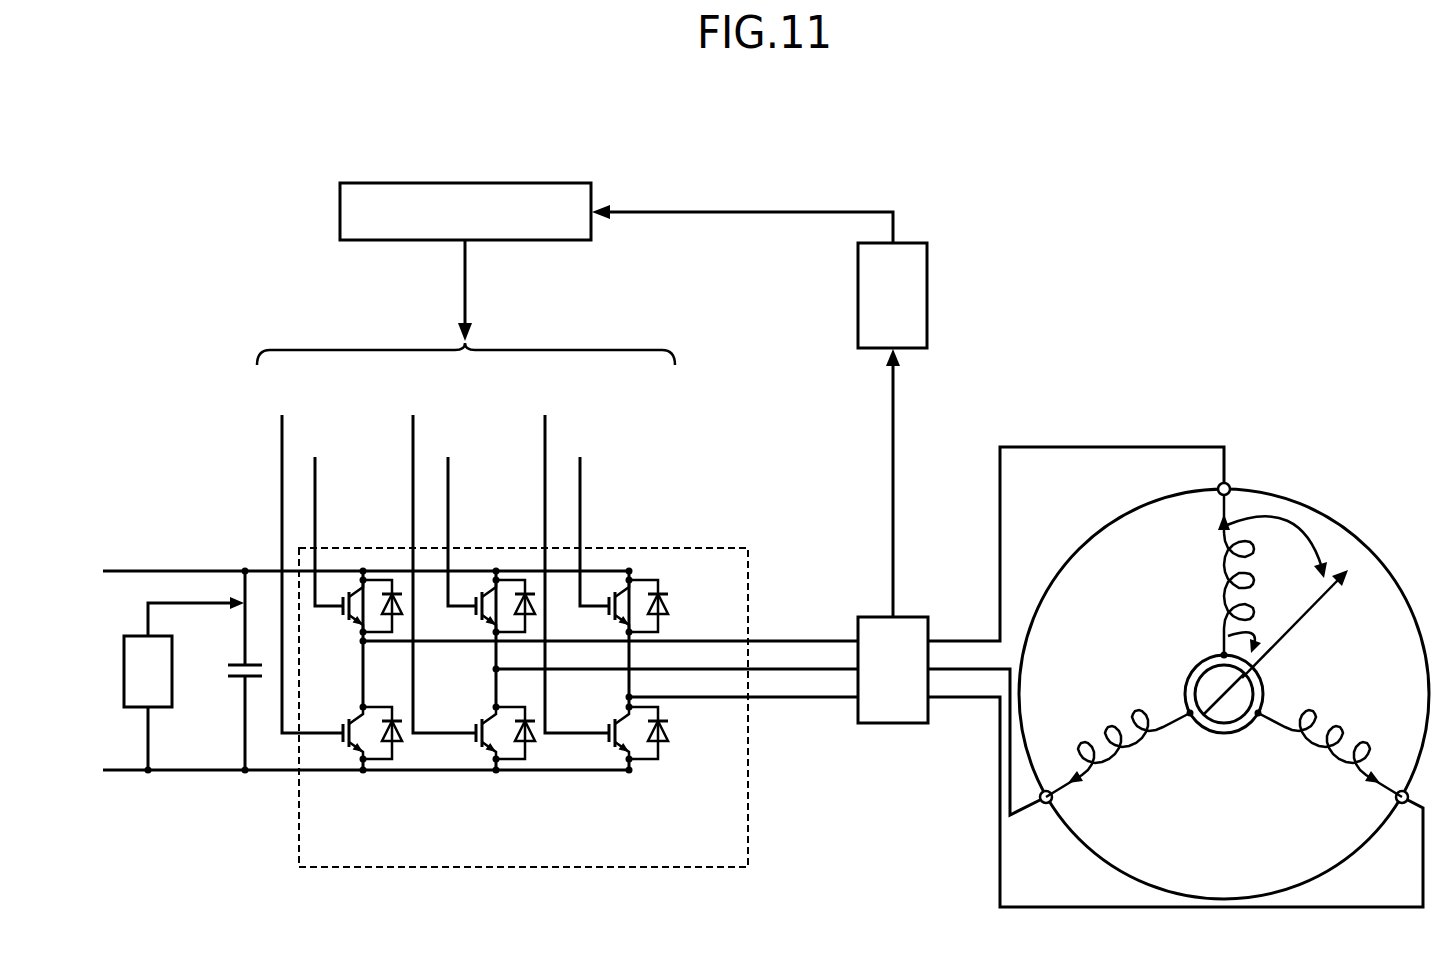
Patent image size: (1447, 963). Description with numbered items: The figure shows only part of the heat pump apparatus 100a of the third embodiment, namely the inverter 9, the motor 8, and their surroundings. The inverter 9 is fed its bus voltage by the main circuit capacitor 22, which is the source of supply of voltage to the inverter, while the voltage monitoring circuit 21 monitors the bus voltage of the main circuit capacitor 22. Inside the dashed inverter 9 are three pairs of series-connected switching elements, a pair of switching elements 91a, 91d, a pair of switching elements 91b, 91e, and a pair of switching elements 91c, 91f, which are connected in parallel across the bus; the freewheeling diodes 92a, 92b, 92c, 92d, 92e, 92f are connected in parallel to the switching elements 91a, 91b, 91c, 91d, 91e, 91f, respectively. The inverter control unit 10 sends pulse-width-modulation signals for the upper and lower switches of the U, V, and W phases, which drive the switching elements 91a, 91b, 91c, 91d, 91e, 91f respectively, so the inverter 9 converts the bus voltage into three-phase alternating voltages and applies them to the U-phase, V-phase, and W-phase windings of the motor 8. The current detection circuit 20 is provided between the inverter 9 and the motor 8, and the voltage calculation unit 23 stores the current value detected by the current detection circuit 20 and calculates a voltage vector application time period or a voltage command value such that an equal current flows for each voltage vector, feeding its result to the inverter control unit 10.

The heat pump apparatus 100a is at (1030, 127).
The inverter control unit 10 is at (533, 183).
The voltage calculation unit 23 is at (917, 243).
The current detection circuit 20 is at (913, 617).
The voltage monitoring circuit 21 is at (138, 634).
The main circuit capacitor 22 is at (238, 680).
The inverter 9 is at (748, 568).
The motor 8 is at (1320, 510).
The switching element 91a is at (332, 616).
The switching element 91b is at (470, 616).
The switching element 91c is at (603, 616).
The switching element 91d is at (335, 745).
The switching element 91e is at (470, 745).
The switching element 91f is at (603, 745).
The freewheeling diode 92a is at (388, 576).
The freewheeling diode 92b is at (521, 576).
The freewheeling diode 92c is at (653, 576).
The freewheeling diode 92d is at (375, 762).
The freewheeling diode 92e is at (508, 762).
The freewheeling diode 92f is at (641, 762).